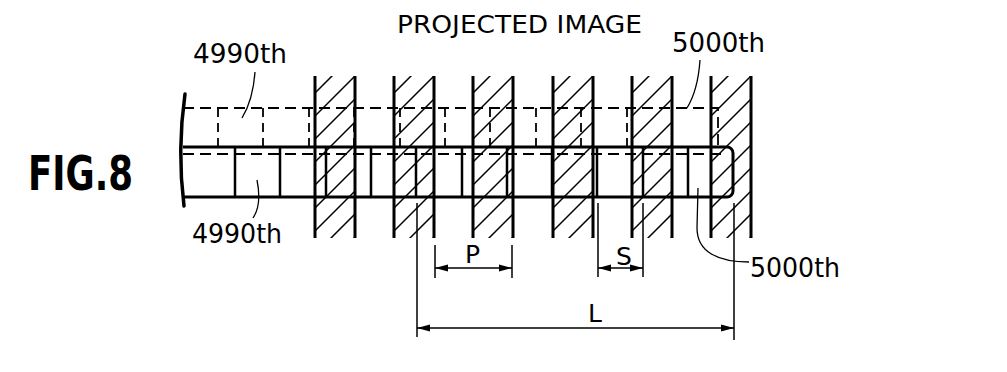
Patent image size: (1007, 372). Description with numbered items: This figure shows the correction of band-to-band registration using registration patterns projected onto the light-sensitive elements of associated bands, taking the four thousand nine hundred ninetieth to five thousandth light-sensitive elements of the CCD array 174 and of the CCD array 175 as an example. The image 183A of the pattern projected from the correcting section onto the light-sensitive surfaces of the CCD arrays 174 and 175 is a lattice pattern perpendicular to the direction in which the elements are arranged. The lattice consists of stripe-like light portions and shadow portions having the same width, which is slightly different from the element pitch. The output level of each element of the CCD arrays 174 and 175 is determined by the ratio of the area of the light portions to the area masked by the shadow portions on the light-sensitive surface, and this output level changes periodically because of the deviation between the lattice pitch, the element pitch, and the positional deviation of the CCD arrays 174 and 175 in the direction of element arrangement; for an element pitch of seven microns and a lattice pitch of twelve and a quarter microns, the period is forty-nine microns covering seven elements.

The image of the pattern 183A is at (333, 96).
The CCD array 175 is at (522, 118).
The CCD array 174 is at (543, 187).